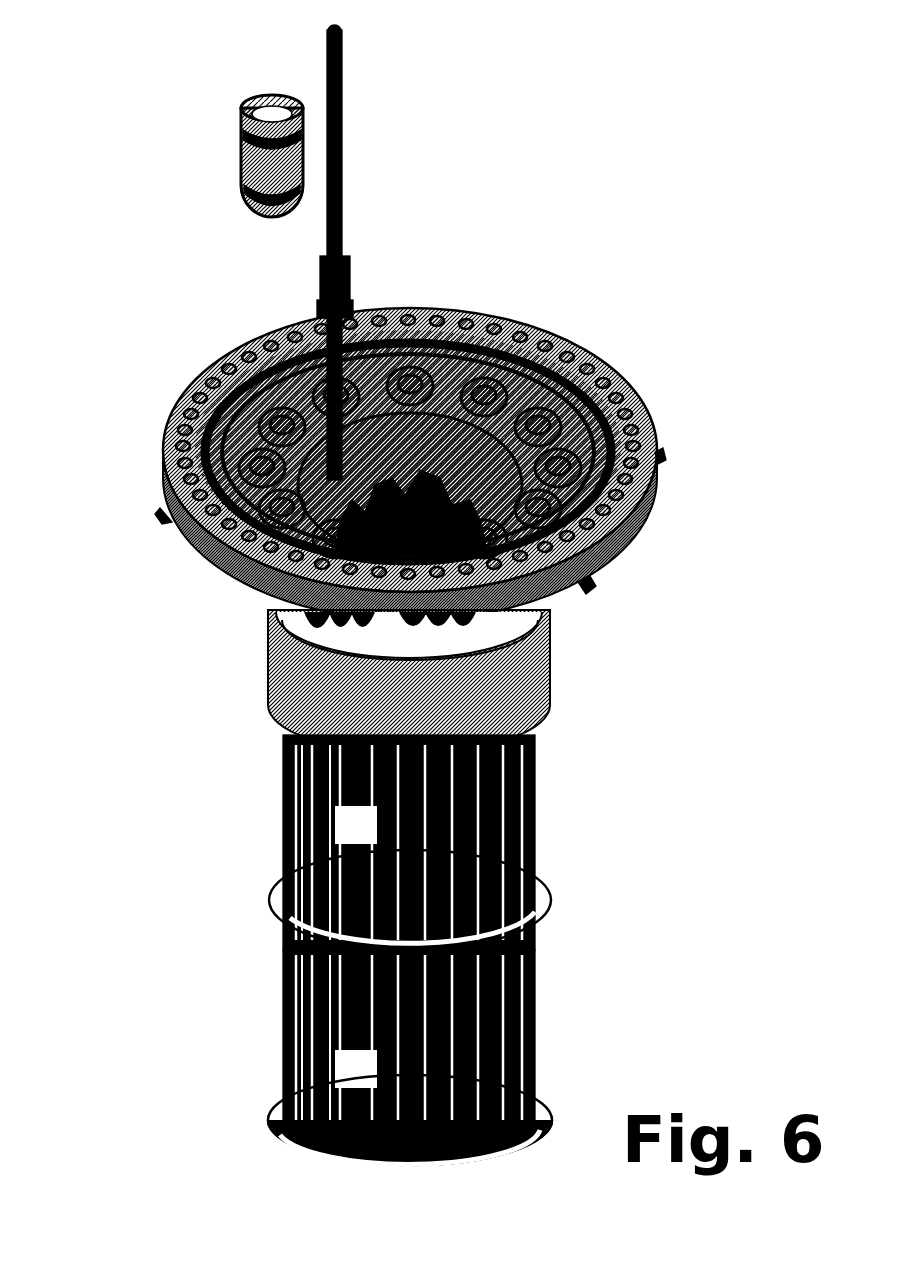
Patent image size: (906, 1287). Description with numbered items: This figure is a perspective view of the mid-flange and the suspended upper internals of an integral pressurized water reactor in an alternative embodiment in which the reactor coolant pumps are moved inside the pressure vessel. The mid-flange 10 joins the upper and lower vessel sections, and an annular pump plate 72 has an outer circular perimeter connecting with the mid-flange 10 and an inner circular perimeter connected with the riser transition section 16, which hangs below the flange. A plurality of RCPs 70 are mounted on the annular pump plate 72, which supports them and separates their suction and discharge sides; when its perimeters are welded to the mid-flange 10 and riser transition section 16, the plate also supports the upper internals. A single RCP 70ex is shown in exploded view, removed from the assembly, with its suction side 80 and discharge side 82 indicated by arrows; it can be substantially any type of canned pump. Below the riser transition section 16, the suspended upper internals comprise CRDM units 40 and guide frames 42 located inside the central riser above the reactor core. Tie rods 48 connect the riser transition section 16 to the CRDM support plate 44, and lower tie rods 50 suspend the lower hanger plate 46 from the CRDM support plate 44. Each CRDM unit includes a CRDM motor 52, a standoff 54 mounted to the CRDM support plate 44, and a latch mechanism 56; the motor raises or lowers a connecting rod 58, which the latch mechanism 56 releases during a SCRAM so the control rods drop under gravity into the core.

The mid-flange 10 is at (622, 395).
The riser transition section 16 is at (548, 684).
The CRDM units 40 is at (409, 842).
The guide frames 42 is at (409, 1045).
The CRDM support plate 44 is at (276, 882).
The lower hanger plate 46 is at (282, 1124).
The tie rods 48 is at (284, 790).
The lower tie rods 50 is at (284, 1052).
The CRDM motor 52 is at (352, 280).
The standoff 54 is at (355, 310).
The latch mechanism 56 is at (346, 138).
The connecting rod 58 is at (376, 366).
The RCPs 70 is at (580, 432).
The RCP shown in exploded view 70ex is at (185, 170).
The annular pump plate 72 is at (206, 400).
The suction side 80 is at (280, 75).
The discharge side 82 is at (278, 236).